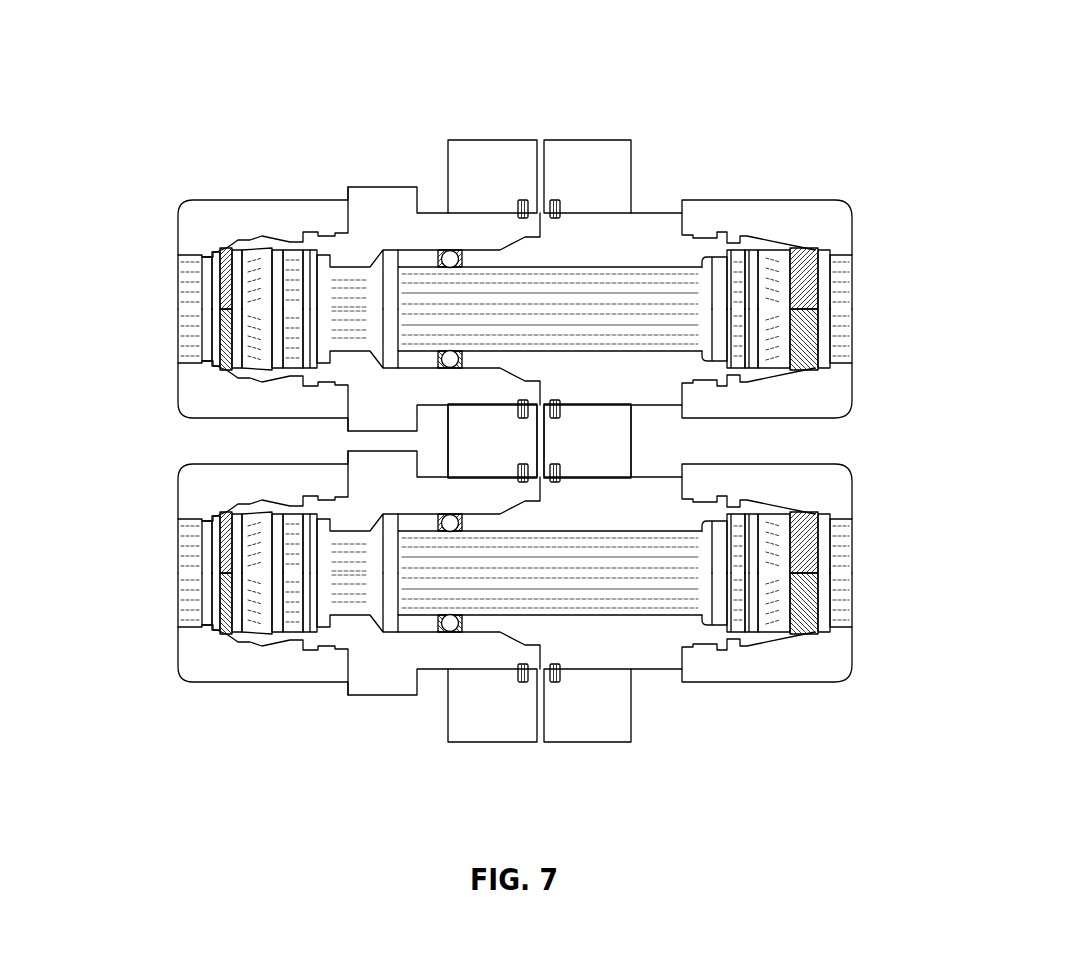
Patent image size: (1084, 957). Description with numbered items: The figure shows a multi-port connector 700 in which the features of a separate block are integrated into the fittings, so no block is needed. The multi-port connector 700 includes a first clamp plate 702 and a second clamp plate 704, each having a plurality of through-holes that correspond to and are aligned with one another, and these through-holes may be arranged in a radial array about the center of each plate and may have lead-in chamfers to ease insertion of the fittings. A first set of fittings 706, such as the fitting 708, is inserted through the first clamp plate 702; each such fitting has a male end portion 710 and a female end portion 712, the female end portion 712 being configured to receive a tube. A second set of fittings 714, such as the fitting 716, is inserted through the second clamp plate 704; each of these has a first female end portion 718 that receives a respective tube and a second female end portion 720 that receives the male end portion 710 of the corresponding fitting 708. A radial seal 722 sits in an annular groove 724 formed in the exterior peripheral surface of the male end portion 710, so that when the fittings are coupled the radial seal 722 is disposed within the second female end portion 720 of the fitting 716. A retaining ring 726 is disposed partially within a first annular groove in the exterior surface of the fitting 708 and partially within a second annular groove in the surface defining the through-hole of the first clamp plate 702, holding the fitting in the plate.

The multi-port connector 700 is at (139, 54).
The first clamp plate 702 is at (590, 153).
The second clamp plate 704 is at (480, 153).
The first set of fittings 706 is at (870, 342).
The fitting 708 is at (740, 213).
The male end portion 710 is at (415, 243).
The female end portion 712 is at (806, 194).
The second set of fittings 714 is at (160, 321).
The fitting 716 is at (315, 208).
The first female end portion 718 is at (206, 203).
The second female end portion 720 is at (505, 398).
The radial seal 722 is at (455, 368).
The annular groove 724 is at (438, 376).
The retaining ring 726 is at (555, 198).